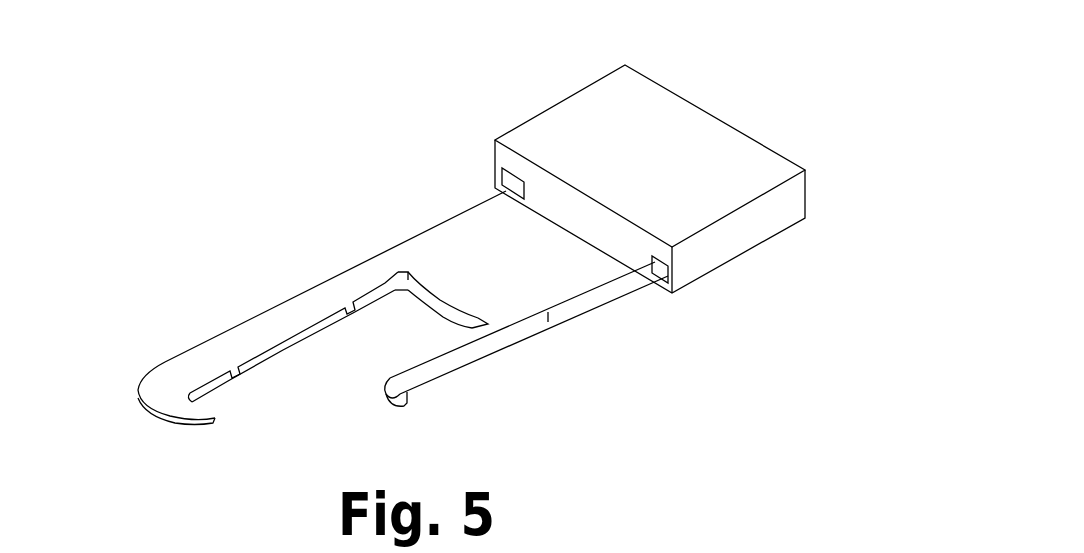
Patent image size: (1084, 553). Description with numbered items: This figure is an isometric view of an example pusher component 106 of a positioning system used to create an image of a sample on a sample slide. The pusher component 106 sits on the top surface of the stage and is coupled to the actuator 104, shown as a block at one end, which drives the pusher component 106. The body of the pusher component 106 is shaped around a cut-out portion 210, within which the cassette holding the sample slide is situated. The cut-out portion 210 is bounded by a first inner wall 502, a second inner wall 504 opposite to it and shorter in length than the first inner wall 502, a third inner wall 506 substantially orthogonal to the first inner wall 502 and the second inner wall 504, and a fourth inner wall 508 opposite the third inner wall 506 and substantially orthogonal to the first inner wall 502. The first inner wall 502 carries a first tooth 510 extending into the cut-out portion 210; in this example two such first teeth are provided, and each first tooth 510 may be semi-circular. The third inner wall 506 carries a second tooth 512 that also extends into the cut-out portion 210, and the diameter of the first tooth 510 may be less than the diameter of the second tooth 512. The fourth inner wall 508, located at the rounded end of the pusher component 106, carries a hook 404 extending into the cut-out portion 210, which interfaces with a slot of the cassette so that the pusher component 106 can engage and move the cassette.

The actuator 104 is at (678, 127).
The pusher component 106 is at (473, 347).
The cut-out portion 210 is at (390, 310).
The hook 404 is at (212, 404).
The first inner wall 502 is at (380, 285).
The second inner wall 504 is at (405, 372).
The third inner wall 506 is at (482, 321).
The fourth inner wall 508 is at (195, 403).
The first tooth 510 is at (350, 303).
The second tooth 512 is at (437, 298).